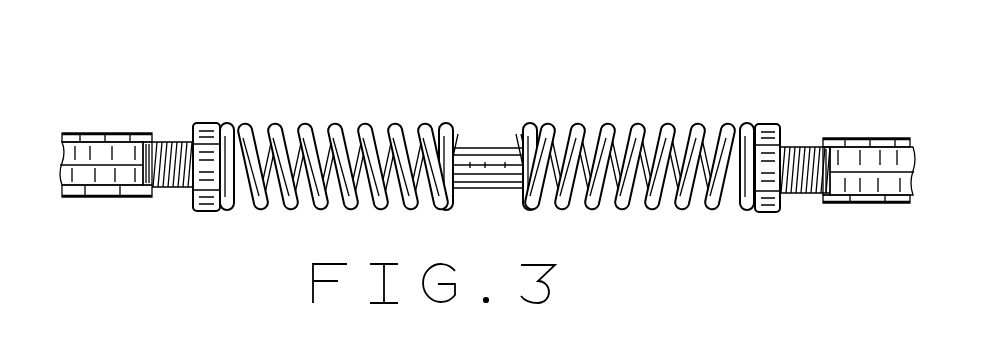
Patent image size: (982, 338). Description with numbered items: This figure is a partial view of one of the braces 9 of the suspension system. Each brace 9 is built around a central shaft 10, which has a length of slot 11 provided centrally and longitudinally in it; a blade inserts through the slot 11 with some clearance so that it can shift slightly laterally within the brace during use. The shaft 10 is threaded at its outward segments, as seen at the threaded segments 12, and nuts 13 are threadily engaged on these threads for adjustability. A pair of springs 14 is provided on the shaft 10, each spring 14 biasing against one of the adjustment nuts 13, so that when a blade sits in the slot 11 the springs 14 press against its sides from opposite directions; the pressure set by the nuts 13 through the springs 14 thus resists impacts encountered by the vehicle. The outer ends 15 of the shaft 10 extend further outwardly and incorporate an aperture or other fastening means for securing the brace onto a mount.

The brace 9 is at (273, 90).
The central shaft 10 is at (480, 148).
The slot 11 is at (498, 166).
The threaded segment 12 is at (173, 142).
The nut 13 is at (207, 122).
The spring 14 is at (363, 128).
The outer end 15 is at (102, 135).